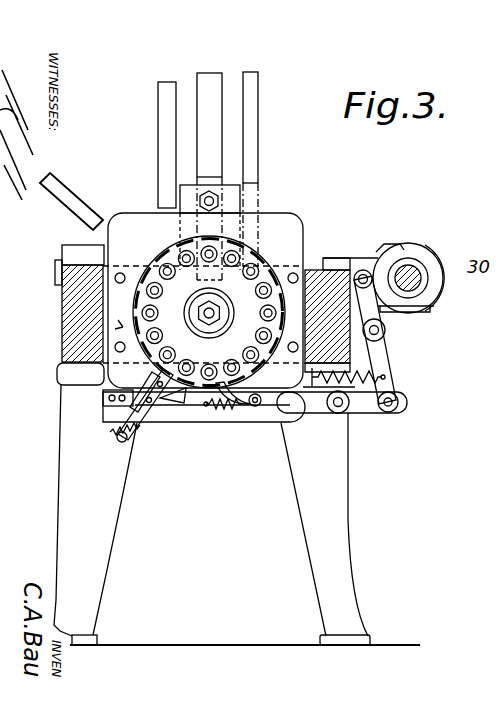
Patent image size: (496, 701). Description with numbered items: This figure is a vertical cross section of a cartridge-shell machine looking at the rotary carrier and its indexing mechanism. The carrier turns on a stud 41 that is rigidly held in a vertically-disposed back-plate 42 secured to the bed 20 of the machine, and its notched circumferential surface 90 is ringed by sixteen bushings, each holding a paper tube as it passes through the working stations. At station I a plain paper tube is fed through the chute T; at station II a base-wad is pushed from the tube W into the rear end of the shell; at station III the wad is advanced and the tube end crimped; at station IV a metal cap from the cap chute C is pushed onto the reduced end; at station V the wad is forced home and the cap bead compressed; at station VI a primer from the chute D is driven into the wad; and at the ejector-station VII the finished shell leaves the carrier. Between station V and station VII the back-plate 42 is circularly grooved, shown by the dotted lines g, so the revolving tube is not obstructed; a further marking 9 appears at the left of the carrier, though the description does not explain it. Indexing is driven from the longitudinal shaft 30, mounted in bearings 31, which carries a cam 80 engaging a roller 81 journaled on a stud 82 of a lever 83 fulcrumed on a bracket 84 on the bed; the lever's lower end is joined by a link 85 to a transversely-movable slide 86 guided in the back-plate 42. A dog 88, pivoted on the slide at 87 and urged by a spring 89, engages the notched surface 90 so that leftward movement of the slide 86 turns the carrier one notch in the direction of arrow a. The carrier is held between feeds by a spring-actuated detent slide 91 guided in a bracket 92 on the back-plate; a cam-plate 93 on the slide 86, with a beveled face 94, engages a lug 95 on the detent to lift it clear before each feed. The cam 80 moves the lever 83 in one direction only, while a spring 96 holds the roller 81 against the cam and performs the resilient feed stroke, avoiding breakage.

The tube W is at (157, 96).
The cap chute C is at (207, 76).
The chute D is at (258, 100).
The chute T is at (55, 207).
The station I is at (100, 298).
The station II is at (163, 270).
The station III is at (182, 255).
The station IV is at (211, 252).
The station V is at (290, 233).
The station VI is at (248, 268).
The ejector-station VII is at (232, 365).
The dial pointer 9 is at (123, 327).
The arrow a is at (123, 338).
The dotted lines g is at (244, 312).
The bed 20 is at (380, 308).
The longitudinal shaft 30 is at (425, 280).
The bearings 31 is at (423, 268).
The stud 41 is at (207, 315).
The plate 42 is at (293, 233).
The cam 80 is at (397, 258).
The roller 81 is at (365, 275).
The stud 82 is at (358, 272).
The lever 83 is at (383, 358).
The bracket 84 is at (388, 334).
The link 85 is at (368, 412).
The slide 86 is at (314, 412).
The pivot 87 is at (256, 407).
The dog 88 is at (244, 408).
The spring 89 is at (206, 406).
The notched circumferential surface 90 is at (250, 388).
The slide 91 is at (124, 441).
The bracket 92 is at (152, 402).
The cam-plate 93 is at (112, 403).
The beveled front face 94 is at (170, 412).
The lug 95 is at (152, 432).
The spring 96 is at (362, 383).